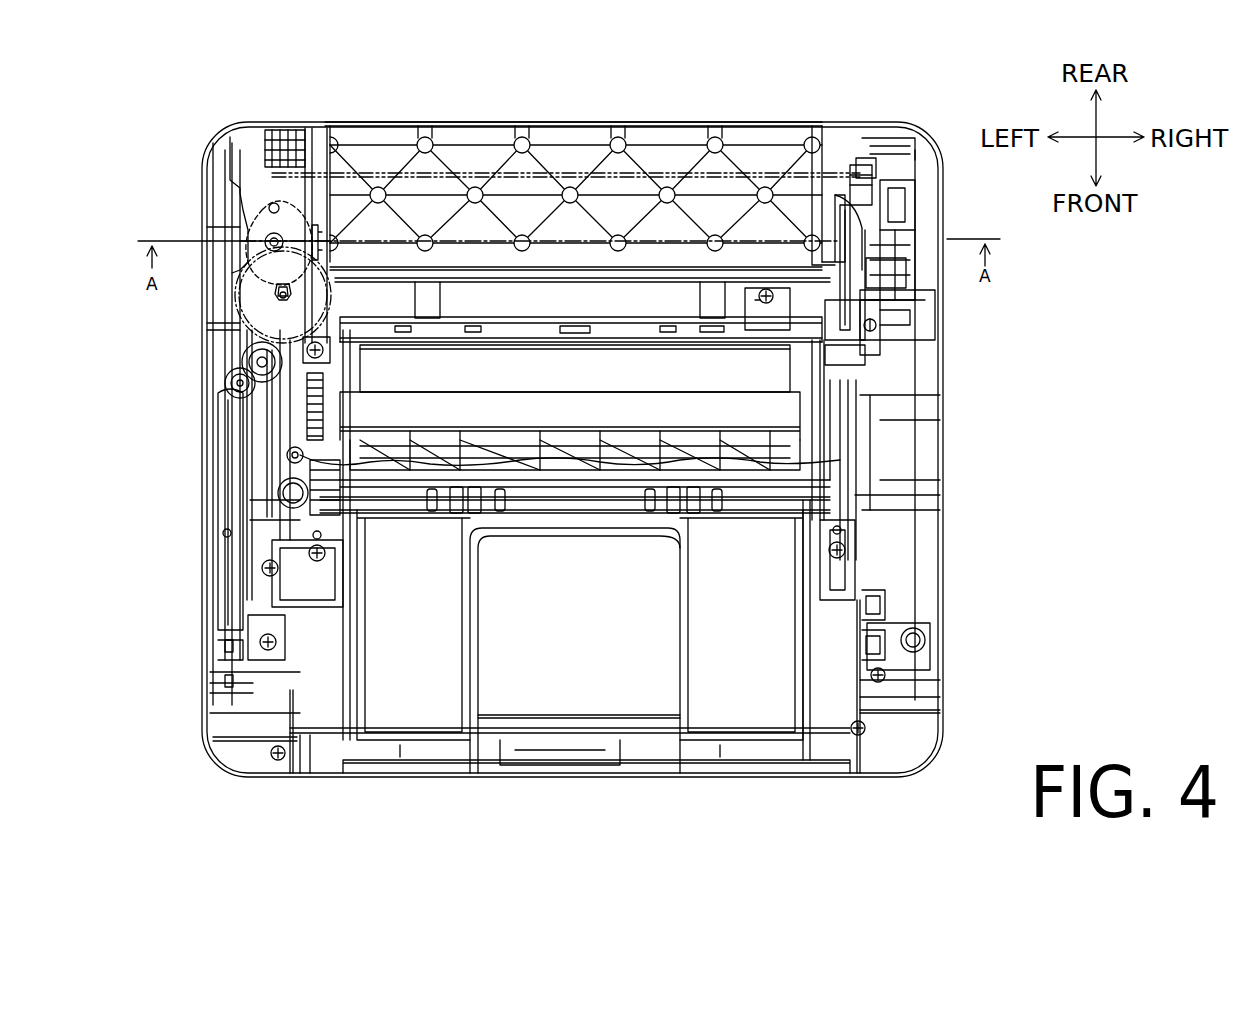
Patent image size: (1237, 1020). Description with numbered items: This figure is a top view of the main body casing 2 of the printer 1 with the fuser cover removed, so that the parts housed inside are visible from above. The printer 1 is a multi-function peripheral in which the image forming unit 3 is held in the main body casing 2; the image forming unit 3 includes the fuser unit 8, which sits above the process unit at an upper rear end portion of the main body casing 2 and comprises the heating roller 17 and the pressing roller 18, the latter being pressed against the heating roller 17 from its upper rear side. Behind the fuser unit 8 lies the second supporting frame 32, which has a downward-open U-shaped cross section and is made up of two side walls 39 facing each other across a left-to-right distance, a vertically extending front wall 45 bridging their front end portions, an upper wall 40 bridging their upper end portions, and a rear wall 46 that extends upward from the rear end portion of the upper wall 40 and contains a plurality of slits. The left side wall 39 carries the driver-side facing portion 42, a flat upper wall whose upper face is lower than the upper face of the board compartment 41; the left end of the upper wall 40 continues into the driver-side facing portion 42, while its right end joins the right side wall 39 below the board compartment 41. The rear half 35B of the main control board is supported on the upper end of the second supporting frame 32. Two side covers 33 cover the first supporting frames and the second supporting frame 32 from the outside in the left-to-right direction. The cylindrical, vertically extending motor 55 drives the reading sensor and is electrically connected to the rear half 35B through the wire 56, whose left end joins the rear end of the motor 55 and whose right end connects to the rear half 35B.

The printer 1 is at (587, 812).
The main body casing 2 is at (329, 787).
The image forming unit 3 is at (573, 641).
The fuser unit 8 is at (727, 407).
The heating roller 17 is at (632, 415).
The pressing roller 18 is at (577, 368).
The second supporting frame 32 is at (583, 147).
The side cover 33 is at (200, 455).
The rear half of the main control board 35B is at (866, 283).
The side wall 39 is at (862, 300).
The upper wall 40 is at (456, 255).
The board compartment 41 is at (835, 200).
The driver-side facing portion 42 is at (318, 193).
The front wall 45 is at (640, 290).
The rear wall 46 is at (548, 124).
The motor 55 is at (265, 222).
The wire 56 is at (912, 190).